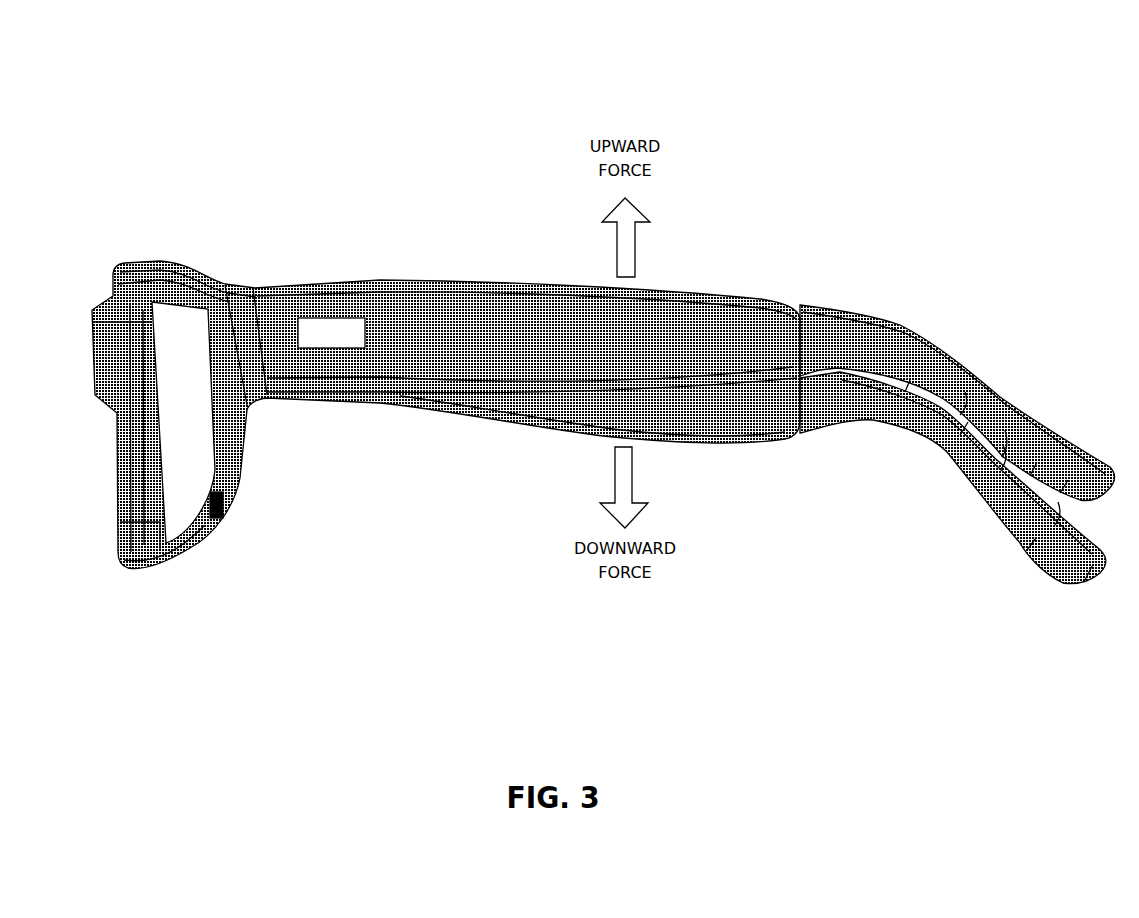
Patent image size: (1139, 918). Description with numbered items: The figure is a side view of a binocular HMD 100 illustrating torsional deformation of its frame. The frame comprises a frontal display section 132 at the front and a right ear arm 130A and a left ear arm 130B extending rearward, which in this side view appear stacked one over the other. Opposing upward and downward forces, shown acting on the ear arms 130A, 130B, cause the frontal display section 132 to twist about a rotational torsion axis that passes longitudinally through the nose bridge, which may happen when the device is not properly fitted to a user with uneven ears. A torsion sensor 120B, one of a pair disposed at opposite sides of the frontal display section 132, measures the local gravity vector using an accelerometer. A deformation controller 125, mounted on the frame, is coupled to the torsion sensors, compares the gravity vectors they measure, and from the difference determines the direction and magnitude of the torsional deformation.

The binocular HMD 100 is at (603, 348).
The frontal display section 132 is at (203, 220).
The deformation controller 125 is at (331, 333).
The torsion sensor 120B is at (219, 518).
The right ear arm 130A is at (995, 523).
The left ear arm 130B is at (905, 325).